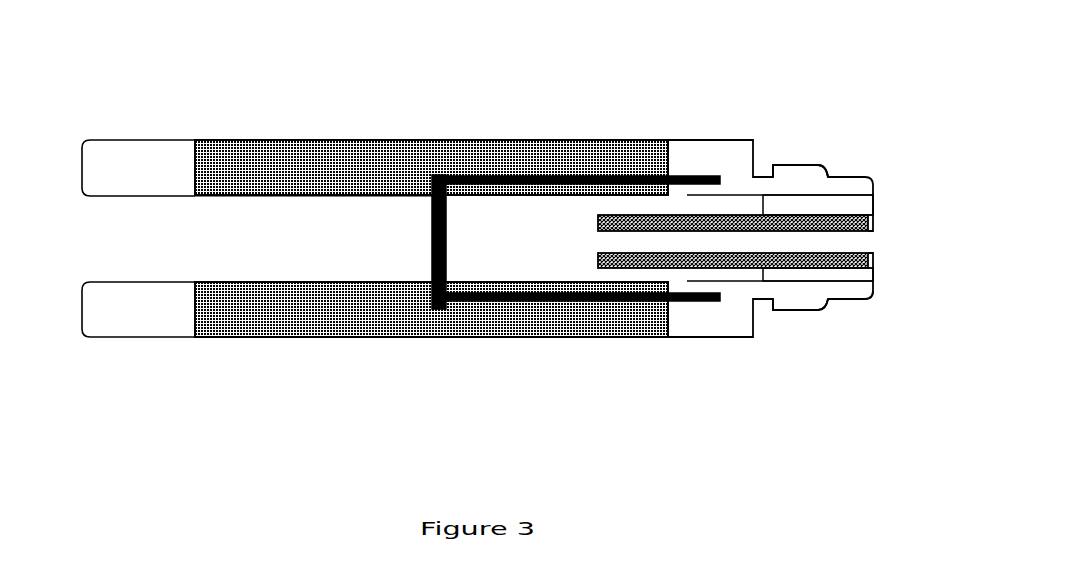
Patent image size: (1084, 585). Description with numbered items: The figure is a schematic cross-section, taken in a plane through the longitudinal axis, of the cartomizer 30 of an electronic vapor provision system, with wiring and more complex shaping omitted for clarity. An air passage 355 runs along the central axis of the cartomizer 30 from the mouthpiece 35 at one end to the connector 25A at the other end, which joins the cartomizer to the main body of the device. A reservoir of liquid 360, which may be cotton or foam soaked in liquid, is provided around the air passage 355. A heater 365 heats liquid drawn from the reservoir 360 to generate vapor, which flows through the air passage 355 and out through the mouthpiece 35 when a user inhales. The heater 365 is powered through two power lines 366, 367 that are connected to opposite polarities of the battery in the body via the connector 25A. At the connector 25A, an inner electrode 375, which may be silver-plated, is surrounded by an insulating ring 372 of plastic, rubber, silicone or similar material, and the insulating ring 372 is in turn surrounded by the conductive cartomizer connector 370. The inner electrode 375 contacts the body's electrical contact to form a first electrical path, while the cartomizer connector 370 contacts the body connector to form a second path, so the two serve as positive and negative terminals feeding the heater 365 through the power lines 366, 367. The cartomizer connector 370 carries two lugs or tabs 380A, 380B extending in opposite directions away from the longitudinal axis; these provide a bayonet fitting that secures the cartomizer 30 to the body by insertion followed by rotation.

The connector 25A is at (894, 399).
The cartomizer 30 is at (431, 302).
The mouthpiece 35 is at (119, 288).
The air passage 355 is at (277, 164).
The reservoir of liquid 360 is at (431, 120).
The heater 365 is at (365, 162).
The power line 366 is at (583, 107).
The power line 367 is at (566, 347).
The cartomizer connector 370 is at (770, 169).
The insulating ring 372 is at (855, 159).
The inner electrode 375 is at (735, 348).
The lug or tab 380A is at (738, 133).
The lug or tab 380B is at (745, 359).